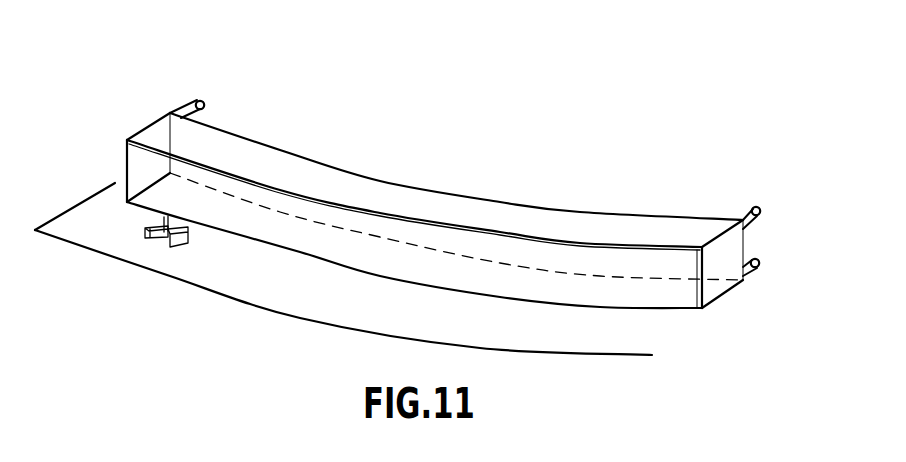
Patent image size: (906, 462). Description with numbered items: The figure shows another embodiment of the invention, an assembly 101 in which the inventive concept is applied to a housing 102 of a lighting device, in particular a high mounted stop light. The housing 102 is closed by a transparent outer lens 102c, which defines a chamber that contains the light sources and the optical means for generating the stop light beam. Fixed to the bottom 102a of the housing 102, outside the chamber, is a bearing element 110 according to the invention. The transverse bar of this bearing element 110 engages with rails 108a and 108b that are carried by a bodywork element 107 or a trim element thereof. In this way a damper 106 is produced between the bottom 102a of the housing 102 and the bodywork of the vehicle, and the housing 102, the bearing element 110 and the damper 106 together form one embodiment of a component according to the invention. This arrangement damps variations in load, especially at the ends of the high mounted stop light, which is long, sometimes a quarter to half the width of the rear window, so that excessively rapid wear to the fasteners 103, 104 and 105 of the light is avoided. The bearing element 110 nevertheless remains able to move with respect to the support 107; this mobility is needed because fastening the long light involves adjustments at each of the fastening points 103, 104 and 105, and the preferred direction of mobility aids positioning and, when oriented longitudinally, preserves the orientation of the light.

The bumper assembly 101 is at (116, 146).
The housing 102 is at (330, 182).
The bottom of the housing 102a is at (328, 253).
The transparent outer lens 102c is at (457, 243).
The fastener 103 is at (203, 101).
The fastener 104 is at (750, 205).
The fastener 105 is at (760, 258).
The damper 106 is at (150, 254).
The bodywork element 107 is at (580, 335).
The rail 108a is at (145, 235).
The rail 108b is at (185, 250).
The bearing element 110 is at (170, 222).